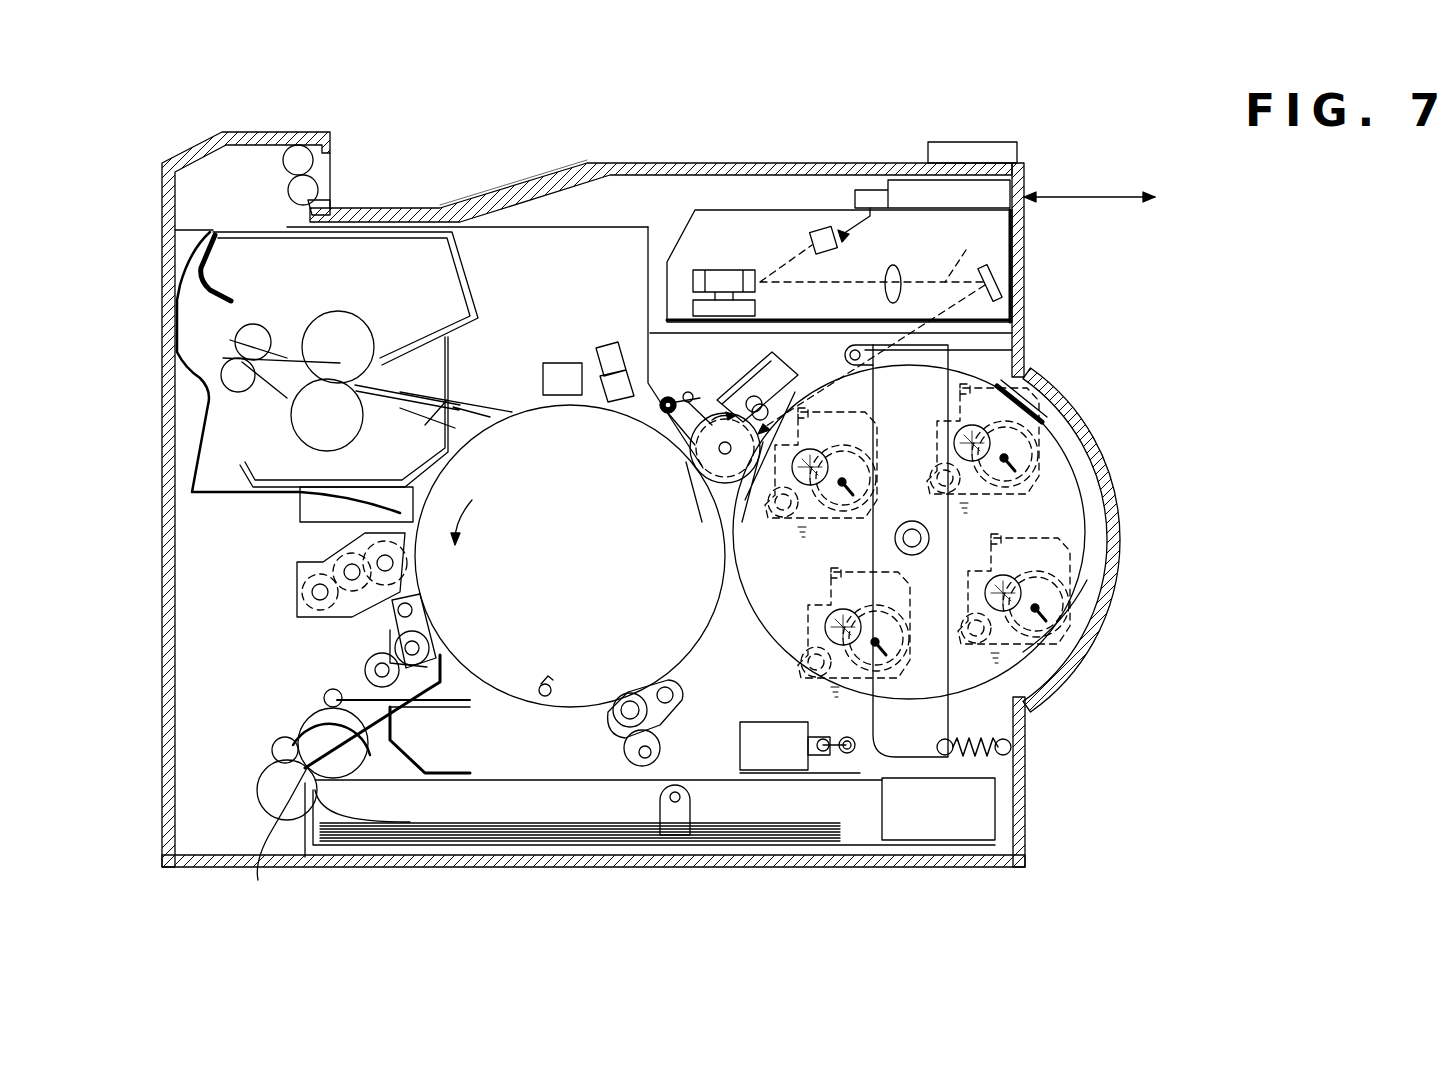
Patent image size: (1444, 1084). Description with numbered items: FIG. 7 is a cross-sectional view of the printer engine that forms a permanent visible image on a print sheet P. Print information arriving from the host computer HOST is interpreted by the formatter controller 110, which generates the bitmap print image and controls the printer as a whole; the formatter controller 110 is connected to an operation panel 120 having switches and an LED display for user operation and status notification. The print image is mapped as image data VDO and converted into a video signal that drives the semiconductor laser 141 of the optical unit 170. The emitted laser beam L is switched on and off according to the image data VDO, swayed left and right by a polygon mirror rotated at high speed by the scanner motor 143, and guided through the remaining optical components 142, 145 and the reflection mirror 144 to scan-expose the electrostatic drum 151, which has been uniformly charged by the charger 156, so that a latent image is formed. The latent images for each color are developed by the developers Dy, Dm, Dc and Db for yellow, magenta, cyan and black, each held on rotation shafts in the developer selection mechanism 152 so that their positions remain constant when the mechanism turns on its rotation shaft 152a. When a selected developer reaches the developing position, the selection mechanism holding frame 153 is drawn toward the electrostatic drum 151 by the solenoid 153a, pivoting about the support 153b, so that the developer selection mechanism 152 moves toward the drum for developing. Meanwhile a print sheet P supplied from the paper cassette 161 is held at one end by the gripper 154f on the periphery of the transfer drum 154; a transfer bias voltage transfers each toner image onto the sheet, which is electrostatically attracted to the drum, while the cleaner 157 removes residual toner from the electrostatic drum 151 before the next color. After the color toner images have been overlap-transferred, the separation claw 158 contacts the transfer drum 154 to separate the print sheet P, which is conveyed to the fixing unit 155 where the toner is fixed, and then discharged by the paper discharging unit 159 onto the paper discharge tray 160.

The formatter controller 110 is at (897, 178).
The operation panel 120 is at (1018, 150).
The semiconductor laser 141 is at (822, 225).
The laser light source 142 is at (721, 268).
The scanner motor 143 is at (690, 305).
The reflection mirror 144 is at (900, 300).
The reflecting mirror 145 is at (1005, 278).
The electrostatic drum 151 is at (695, 470).
The developer selection mechanism 152 is at (1062, 478).
The rotation shaft 152a is at (928, 536).
The selection mechanism holding frame 153 is at (942, 725).
The solenoid 153a is at (753, 737).
The support 153b is at (1014, 350).
The transfer drum 154 is at (695, 632).
The gripper 154f is at (545, 683).
The fixing unit 155 is at (223, 410).
The charger 156 is at (790, 362).
The cleaner 157 is at (686, 393).
The separation claw 158 is at (478, 402).
The paper discharging unit 159 is at (318, 166).
The paper discharge tray 160 is at (400, 212).
The paper cassette 161 is at (922, 832).
The optical unit 170 is at (682, 236).
The developer for yellow Dy is at (852, 428).
The developer for cyan Dc is at (1050, 420).
The developer for magenta Dm is at (1042, 600).
The developer for black Db is at (815, 592).
The print sheet P is at (445, 734).
The laser beam L is at (961, 250).
The image data (video signal) VDO is at (860, 222).
The host computer HOST is at (1089, 184).